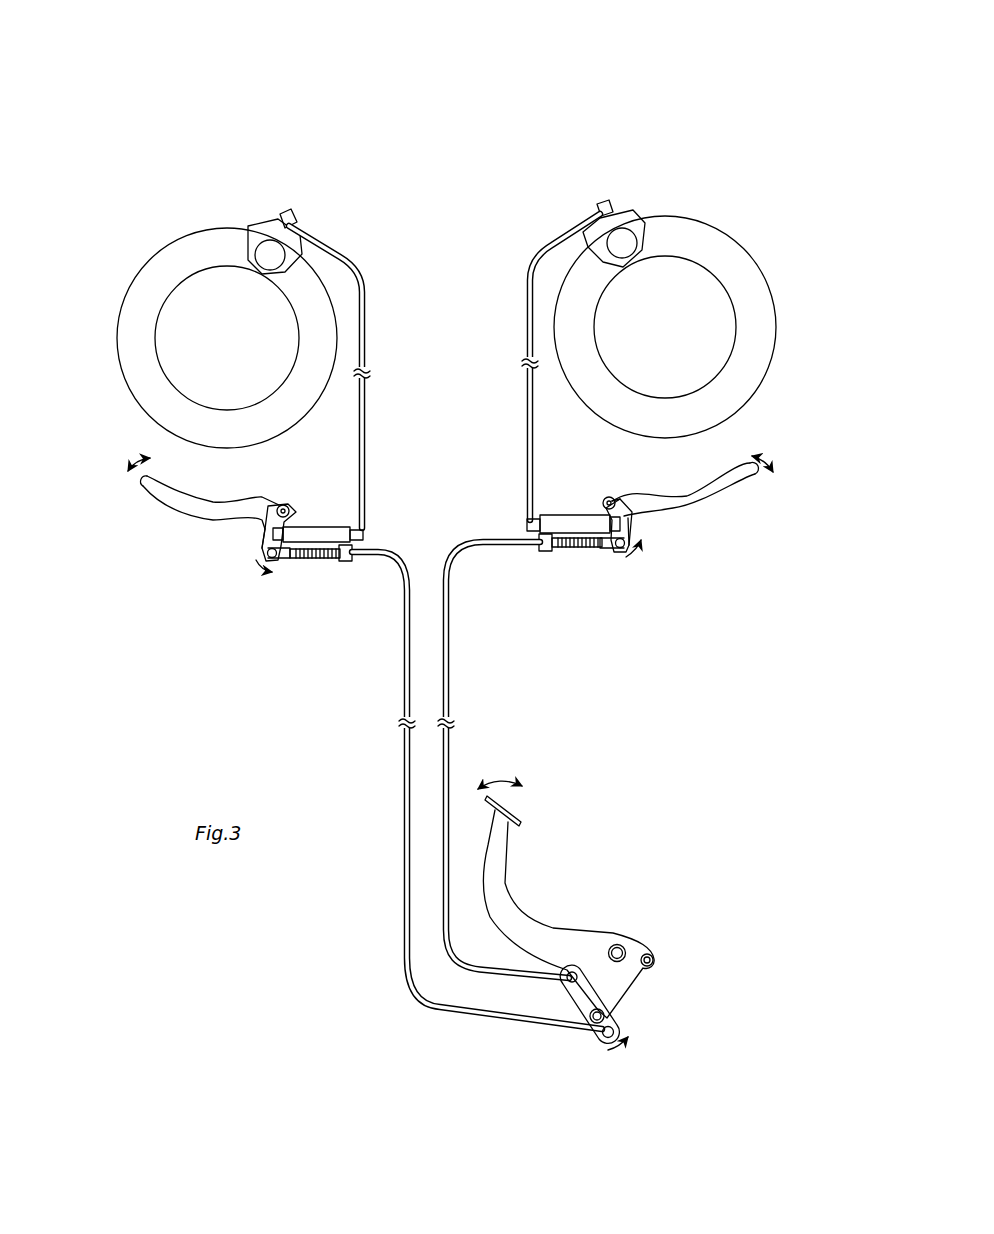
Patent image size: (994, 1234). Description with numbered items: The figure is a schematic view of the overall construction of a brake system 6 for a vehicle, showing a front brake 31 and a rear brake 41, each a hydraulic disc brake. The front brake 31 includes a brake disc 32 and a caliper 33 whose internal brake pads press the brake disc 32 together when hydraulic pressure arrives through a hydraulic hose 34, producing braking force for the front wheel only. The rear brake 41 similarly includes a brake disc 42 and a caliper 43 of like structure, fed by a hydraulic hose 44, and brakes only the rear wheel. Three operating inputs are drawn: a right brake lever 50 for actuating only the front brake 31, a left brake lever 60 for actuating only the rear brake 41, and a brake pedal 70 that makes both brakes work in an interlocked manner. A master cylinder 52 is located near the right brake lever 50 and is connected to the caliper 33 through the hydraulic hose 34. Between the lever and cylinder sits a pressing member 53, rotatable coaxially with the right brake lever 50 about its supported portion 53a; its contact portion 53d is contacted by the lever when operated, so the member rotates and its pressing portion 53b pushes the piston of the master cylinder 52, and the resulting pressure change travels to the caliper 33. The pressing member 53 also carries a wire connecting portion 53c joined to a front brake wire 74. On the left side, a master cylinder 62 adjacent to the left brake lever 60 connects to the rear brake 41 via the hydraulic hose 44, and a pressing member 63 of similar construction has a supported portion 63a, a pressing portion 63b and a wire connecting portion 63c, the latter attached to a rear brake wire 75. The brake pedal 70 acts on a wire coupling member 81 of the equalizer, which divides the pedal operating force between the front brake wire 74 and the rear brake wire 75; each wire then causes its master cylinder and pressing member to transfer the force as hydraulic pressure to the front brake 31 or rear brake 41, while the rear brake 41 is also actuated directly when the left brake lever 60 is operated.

The brake system 6 is at (649, 116).
The front brake 31 is at (575, 197).
The brake disc 32 is at (706, 240).
The caliper 33 is at (634, 222).
The hydraulic hose 34 is at (524, 329).
The rear brake 41 is at (310, 202).
The brake disc 42 is at (166, 258).
The caliper 43 is at (258, 226).
The hydraulic hose 44 is at (368, 302).
The right brake lever 50 is at (713, 494).
The master cylinder 52 is at (561, 514).
The pressing member 53 is at (640, 521).
The supported portion 53a is at (609, 497).
The pressing portion 53b is at (633, 525).
The wire connecting portion 53c is at (619, 550).
The contact portion 53d is at (628, 511).
The left brake lever 60 is at (180, 506).
The master cylinder 62 is at (325, 526).
The pressing member 63 is at (253, 535).
The supported portion 63a is at (282, 504).
The pressing portion 63b is at (257, 541).
The wire connecting portion 63c is at (275, 563).
The brake pedal 70 is at (549, 930).
The front brake wire 74 is at (452, 690).
The rear brake wire 75 is at (402, 690).
The wire coupling member 81 is at (577, 995).